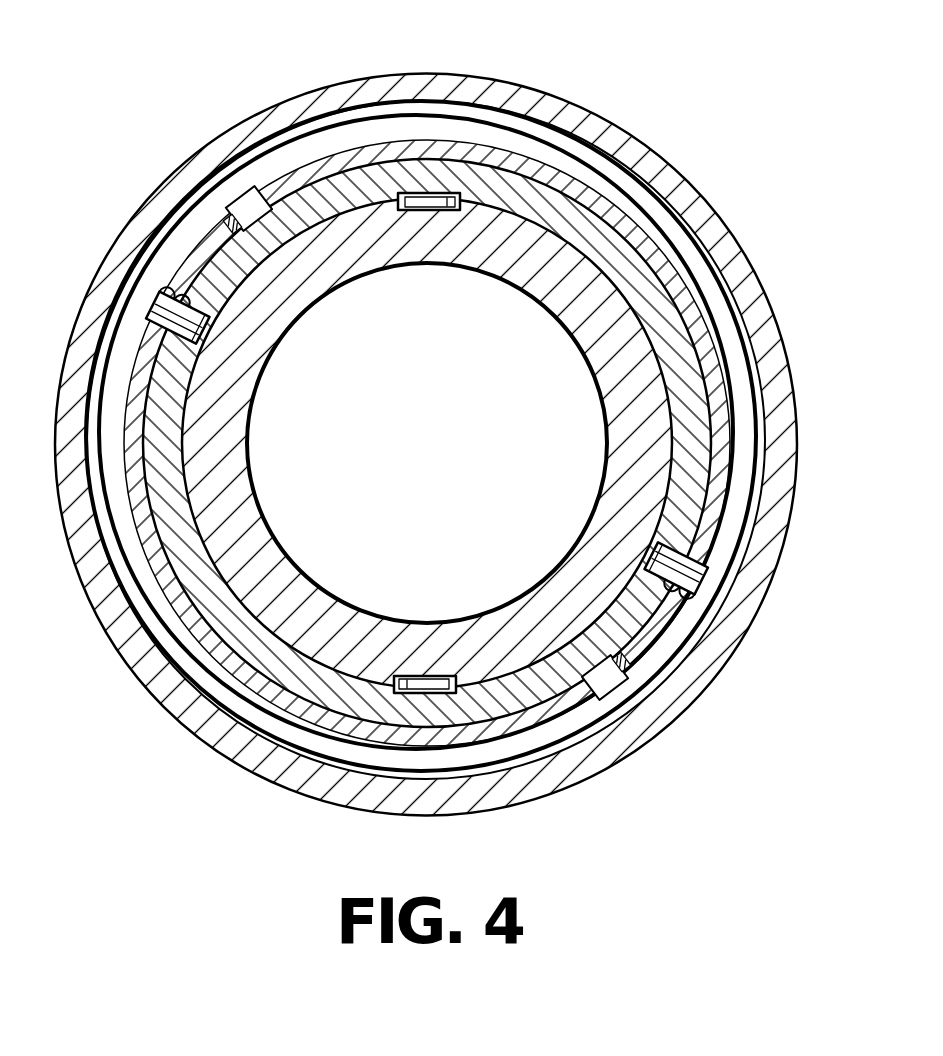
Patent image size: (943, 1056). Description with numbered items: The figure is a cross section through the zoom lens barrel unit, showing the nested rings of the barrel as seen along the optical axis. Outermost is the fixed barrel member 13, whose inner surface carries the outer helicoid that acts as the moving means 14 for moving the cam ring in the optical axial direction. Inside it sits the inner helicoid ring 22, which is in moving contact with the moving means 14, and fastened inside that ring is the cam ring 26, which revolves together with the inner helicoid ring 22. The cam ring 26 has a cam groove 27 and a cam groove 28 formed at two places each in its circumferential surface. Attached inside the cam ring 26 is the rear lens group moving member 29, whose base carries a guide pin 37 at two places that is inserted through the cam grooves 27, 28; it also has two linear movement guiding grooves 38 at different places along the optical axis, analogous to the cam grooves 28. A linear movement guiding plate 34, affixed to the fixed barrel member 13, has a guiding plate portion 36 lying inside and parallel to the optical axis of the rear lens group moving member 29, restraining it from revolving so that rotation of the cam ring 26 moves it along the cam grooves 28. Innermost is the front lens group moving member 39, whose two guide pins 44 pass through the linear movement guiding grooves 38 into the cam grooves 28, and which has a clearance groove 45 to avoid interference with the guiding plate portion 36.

The fixed barrel member 13 is at (592, 118).
The moving means 14 is at (652, 174).
The inner helicoid ring 22 is at (657, 225).
The cam ring 26 is at (677, 263).
The rear lens group moving member 29 is at (662, 306).
The front lens group moving member 39 is at (627, 380).
The linear movement guiding plate 34 is at (401, 212).
The guiding plate portion 36 is at (430, 212).
The clearance groove 45 is at (452, 212).
The guide pins 44 is at (160, 306).
The cam groove 28 is at (172, 270).
The linear movement guiding grooves 38 is at (193, 280).
The cam groove 27 is at (270, 183).
The guide pin 37 is at (247, 207).